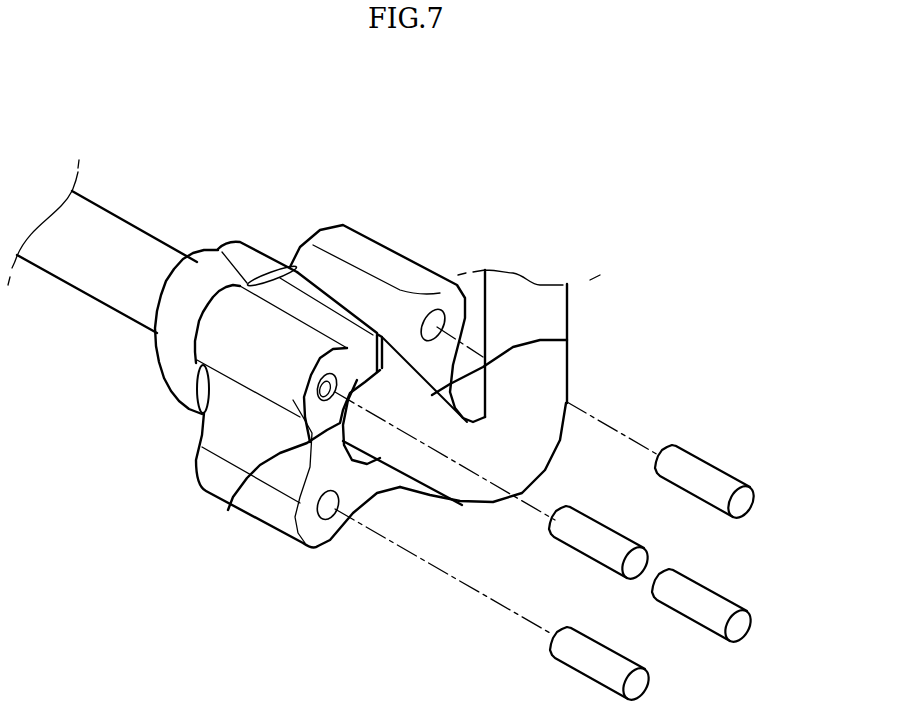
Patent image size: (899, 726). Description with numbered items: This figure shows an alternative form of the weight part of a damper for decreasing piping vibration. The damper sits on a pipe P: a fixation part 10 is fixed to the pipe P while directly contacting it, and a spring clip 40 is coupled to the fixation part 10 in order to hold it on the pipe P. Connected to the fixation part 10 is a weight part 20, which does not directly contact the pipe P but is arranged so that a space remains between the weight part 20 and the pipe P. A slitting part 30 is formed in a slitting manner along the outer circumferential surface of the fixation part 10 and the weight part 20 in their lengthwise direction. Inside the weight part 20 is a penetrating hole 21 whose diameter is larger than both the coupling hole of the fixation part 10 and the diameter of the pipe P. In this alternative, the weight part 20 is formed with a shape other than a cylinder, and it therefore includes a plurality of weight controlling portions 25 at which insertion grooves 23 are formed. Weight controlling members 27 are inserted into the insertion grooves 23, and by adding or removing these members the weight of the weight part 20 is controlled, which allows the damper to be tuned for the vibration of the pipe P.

The pipe P is at (118, 230).
The fixation part 10 is at (273, 238).
The weight part 20 is at (420, 242).
The penetrating hole 21 is at (567, 340).
The insertion groove 23 is at (330, 390).
The weight controlling portion 25 is at (317, 537).
The weight controlling member 27 is at (602, 660).
The slitting part 30 is at (216, 250).
The spring clip 40 is at (180, 398).